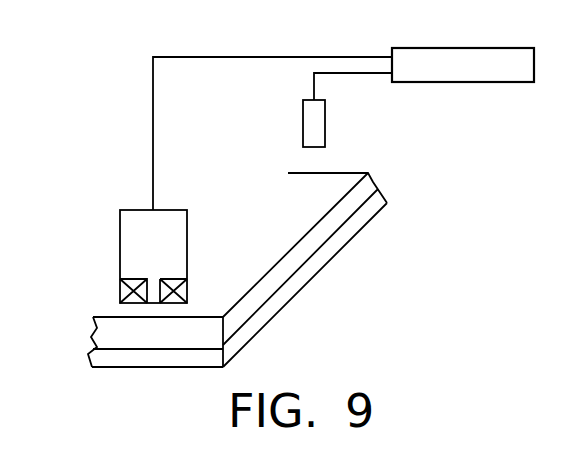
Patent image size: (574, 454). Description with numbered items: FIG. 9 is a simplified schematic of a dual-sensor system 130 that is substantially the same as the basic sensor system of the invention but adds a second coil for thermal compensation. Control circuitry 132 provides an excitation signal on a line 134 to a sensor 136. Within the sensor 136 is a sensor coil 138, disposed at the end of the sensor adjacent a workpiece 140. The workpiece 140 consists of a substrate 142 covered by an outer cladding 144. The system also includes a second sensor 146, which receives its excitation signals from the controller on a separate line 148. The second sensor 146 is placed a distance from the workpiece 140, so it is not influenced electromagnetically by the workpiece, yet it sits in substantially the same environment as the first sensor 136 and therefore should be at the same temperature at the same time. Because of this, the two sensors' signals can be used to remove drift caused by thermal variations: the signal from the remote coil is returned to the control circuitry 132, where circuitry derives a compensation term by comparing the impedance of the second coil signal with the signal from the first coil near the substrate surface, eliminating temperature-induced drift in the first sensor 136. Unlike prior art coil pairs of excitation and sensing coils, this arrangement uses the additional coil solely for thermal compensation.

The system 130 is at (106, 100).
The control circuitry 132 is at (480, 48).
The line 134 is at (195, 128).
The sensor 136 is at (101, 195).
The sensor coil 138 is at (138, 257).
The workpiece 140 is at (301, 196).
The substrate 142 is at (213, 360).
The outer cladding 144 is at (213, 334).
The second sensor 146 is at (325, 131).
The line 148 is at (338, 74).